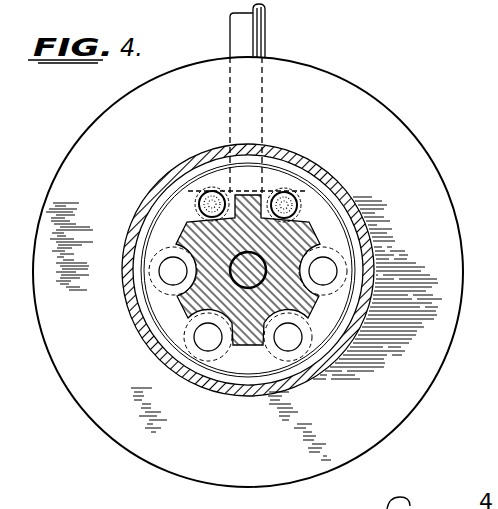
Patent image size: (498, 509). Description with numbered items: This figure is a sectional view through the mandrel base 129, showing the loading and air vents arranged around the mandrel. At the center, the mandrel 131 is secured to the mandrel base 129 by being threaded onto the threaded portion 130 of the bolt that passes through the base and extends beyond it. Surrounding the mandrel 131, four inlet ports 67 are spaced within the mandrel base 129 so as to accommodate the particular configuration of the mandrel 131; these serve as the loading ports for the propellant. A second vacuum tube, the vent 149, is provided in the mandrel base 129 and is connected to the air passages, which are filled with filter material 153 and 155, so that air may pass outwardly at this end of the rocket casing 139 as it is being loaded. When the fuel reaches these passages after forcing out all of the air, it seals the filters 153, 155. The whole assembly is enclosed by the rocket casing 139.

The mandrel base 129 is at (356, 296).
The second vacuum tube 149 is at (265, 46).
The rocket casing 139 is at (326, 173).
The mandrel 131 is at (178, 303).
The threaded portion of the bolt 130 is at (249, 289).
The inlet ports 67 is at (208, 352).
The vent passage 155 is at (199, 204).
The vent passage with filter material 153 is at (297, 206).